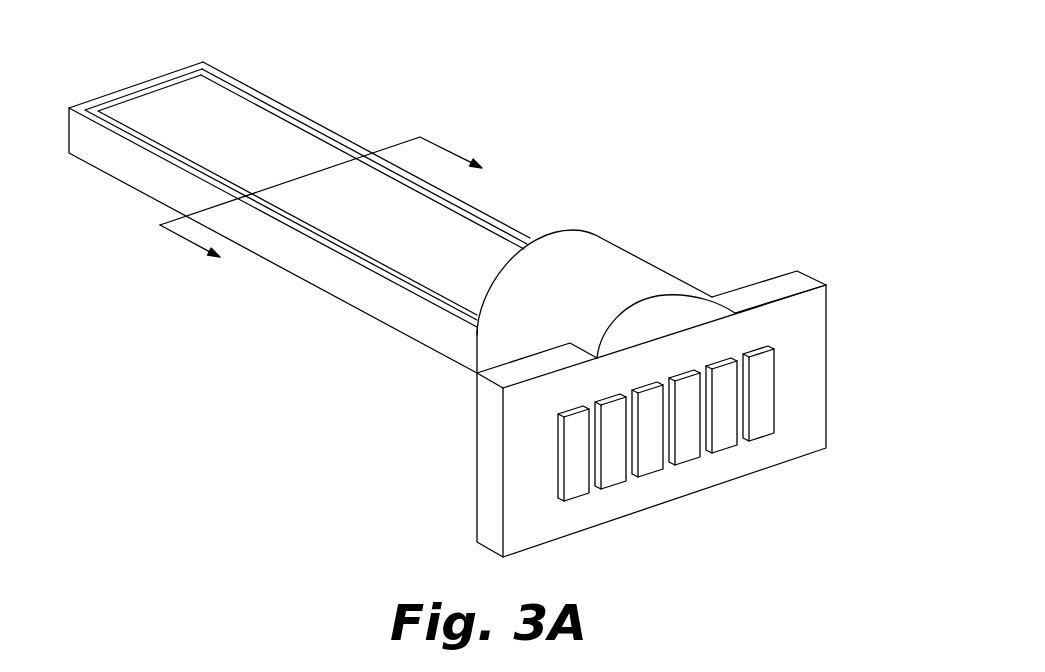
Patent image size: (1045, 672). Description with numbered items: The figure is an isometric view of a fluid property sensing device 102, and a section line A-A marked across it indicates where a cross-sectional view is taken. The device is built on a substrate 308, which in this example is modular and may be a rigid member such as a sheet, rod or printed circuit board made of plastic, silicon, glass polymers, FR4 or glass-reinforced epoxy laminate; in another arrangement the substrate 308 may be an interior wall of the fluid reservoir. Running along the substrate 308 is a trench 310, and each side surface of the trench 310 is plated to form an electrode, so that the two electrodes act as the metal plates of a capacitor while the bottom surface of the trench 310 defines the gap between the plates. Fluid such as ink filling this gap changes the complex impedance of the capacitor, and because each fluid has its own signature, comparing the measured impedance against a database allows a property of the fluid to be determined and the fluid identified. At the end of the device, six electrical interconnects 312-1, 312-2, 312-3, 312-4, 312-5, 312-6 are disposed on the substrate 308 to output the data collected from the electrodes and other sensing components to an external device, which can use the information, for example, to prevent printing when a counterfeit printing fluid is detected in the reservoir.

The fluid property sensing device 102 is at (674, 85).
The substrate 308 is at (258, 130).
The trench 310 is at (213, 75).
The electrical interconnect 312-1 is at (577, 483).
The electrical interconnect 312-2 is at (622, 483).
The electrical interconnect 312-3 is at (653, 450).
The electrical interconnect 312-4 is at (690, 447).
The electrical interconnect 312-5 is at (738, 440).
The electrical interconnect 312-6 is at (760, 401).